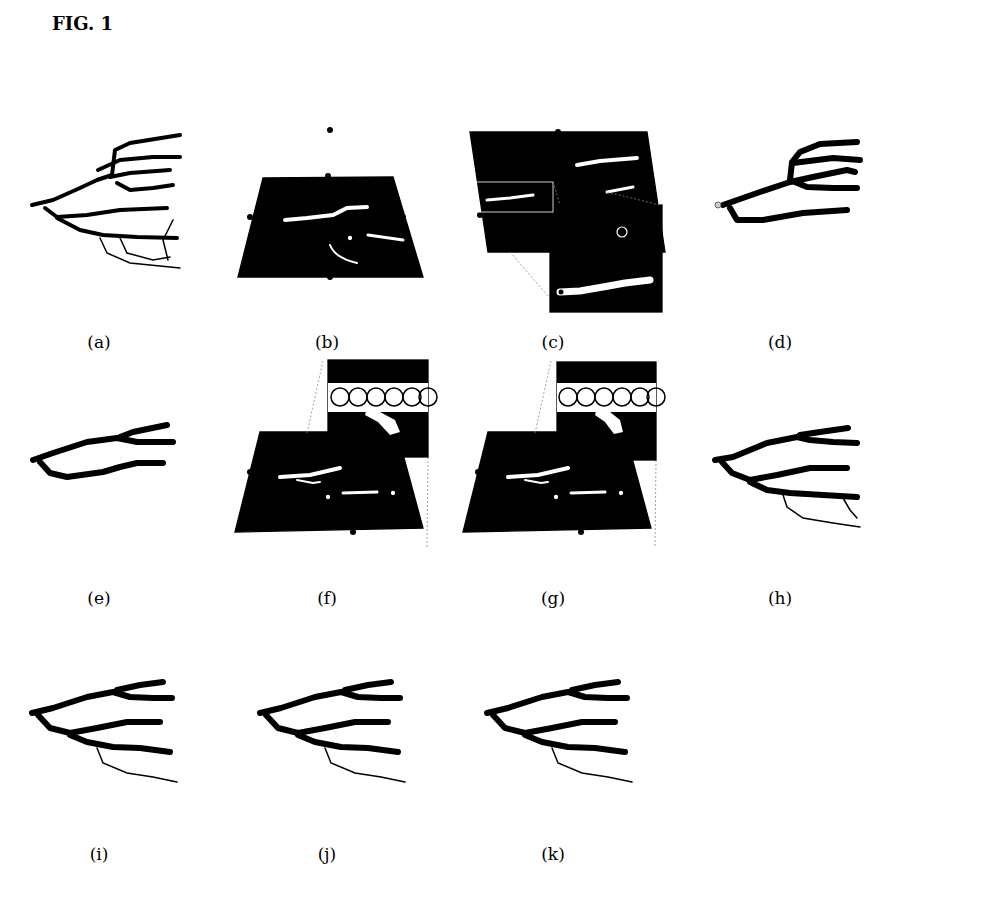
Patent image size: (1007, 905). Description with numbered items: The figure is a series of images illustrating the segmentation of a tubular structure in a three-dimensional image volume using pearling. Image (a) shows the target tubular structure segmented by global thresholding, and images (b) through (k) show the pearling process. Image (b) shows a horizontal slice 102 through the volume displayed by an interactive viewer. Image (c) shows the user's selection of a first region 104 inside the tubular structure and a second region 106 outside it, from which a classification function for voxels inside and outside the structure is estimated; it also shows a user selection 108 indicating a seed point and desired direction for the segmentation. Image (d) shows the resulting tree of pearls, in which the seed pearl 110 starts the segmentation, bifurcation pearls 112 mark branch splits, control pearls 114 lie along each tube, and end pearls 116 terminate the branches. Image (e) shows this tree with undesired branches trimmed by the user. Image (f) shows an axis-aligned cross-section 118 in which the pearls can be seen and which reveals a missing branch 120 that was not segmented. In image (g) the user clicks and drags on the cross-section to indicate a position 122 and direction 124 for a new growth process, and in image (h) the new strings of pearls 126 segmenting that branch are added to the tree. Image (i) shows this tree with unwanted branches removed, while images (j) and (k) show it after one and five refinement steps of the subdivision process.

The horizontal slice 102 is at (318, 168).
The first region 104 is at (652, 282).
The second region 106 is at (618, 233).
The user selection 108 is at (549, 296).
The seed pearl 110 is at (716, 205).
The bifurcation pearls 112 is at (768, 200).
The control pearls 114 is at (803, 223).
The end pearls 116 is at (848, 200).
The axis-aligned cross-section 118 is at (257, 432).
The missing branch 120 is at (373, 430).
The position 122 is at (611, 411).
The direction 124 is at (605, 425).
The new strings of pearls 126 is at (803, 527).